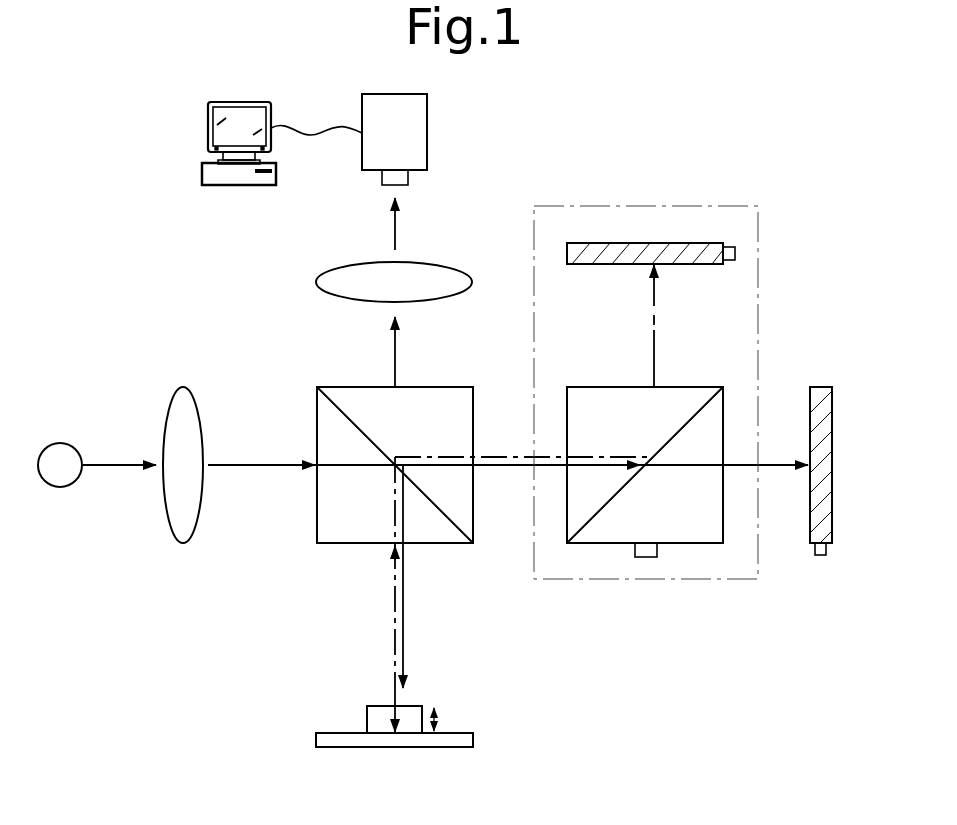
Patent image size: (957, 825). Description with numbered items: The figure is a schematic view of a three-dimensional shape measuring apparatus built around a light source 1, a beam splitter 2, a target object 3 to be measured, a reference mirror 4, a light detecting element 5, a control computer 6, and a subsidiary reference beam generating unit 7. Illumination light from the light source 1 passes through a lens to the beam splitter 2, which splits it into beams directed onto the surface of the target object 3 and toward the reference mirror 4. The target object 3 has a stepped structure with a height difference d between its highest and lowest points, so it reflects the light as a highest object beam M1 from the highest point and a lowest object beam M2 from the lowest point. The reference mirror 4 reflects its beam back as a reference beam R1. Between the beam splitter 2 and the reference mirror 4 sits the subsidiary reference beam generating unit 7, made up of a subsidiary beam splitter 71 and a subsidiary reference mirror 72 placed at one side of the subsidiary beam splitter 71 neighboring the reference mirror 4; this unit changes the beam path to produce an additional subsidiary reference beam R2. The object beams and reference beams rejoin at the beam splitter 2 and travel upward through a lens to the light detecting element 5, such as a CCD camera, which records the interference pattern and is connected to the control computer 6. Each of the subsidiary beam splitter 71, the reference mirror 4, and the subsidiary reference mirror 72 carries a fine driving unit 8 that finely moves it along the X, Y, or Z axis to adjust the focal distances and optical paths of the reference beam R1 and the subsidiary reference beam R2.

The light source 1 is at (61, 488).
The beam splitter 2 is at (317, 524).
The target object 3 is at (343, 700).
The reference mirror 4 is at (837, 418).
The light detecting element 5 is at (428, 133).
The control computer 6 is at (213, 186).
The subsidiary reference beam generating unit 7 is at (759, 358).
The subsidiary beam splitter 71 is at (590, 544).
The subsidiary reference mirror 72 is at (597, 243).
The fine driving unit 8 is at (736, 252).
The highest object beam M1 is at (404, 617).
The lowest object beam M2 is at (392, 700).
The reference beam R1 is at (777, 466).
The subsidiary reference beam R2 is at (656, 320).
The step height d is at (447, 721).